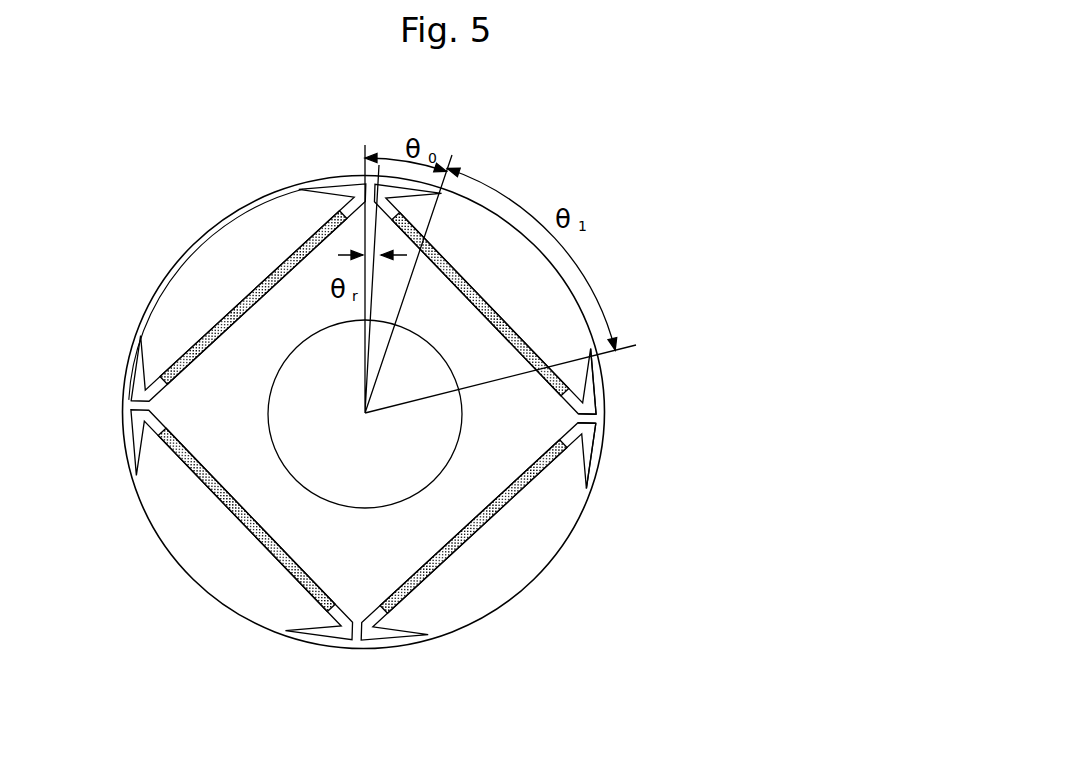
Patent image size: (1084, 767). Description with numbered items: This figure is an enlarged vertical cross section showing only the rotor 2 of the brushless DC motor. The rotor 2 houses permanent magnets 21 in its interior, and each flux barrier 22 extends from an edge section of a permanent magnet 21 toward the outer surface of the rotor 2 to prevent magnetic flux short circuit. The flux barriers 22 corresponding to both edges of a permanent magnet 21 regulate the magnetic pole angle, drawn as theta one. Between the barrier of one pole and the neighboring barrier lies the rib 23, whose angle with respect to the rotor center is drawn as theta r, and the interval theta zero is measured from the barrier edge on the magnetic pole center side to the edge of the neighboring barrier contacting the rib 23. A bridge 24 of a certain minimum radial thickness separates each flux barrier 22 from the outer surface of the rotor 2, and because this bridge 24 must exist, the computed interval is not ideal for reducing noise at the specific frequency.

The rotor 2 is at (517, 552).
The permanent magnet 21 is at (507, 318).
The flux barrier 22 is at (595, 397).
The rib 23 is at (593, 422).
The bridge 24 is at (603, 465).